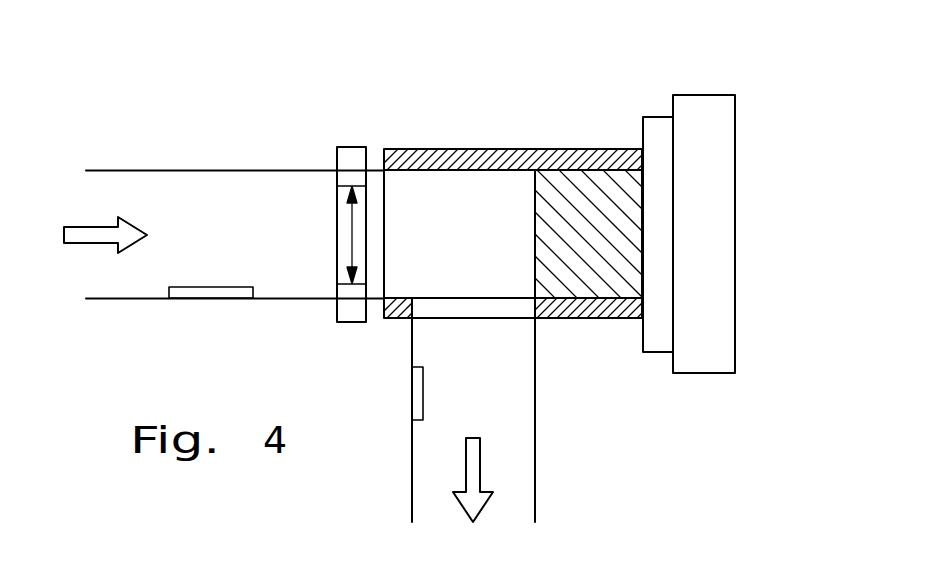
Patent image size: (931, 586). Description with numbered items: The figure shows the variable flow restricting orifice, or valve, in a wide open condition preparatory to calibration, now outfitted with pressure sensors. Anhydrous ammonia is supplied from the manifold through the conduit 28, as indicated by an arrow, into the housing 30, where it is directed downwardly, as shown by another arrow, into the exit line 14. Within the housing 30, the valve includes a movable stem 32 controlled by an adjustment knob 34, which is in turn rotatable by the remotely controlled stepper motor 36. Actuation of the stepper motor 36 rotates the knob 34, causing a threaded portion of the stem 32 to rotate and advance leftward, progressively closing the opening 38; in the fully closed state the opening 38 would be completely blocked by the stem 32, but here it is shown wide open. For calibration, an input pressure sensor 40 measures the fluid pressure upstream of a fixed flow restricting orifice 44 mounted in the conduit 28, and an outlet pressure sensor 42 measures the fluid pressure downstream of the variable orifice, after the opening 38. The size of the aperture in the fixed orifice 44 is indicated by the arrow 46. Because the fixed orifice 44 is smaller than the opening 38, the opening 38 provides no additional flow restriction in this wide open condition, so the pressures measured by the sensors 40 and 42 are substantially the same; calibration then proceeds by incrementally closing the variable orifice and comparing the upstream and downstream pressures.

The exit line 14 is at (535, 460).
The conduit 28 is at (223, 170).
The housing 30 is at (590, 157).
The movable stem 32 is at (567, 277).
The adjustment knob 34 is at (658, 127).
The stepper motor 36 is at (713, 113).
The opening 38 is at (485, 315).
The input pressure sensor 40 is at (220, 293).
The outlet pressure sensor 42 is at (418, 397).
The fixed flow restricting orifice 44 is at (352, 158).
The arrow 46 is at (337, 234).